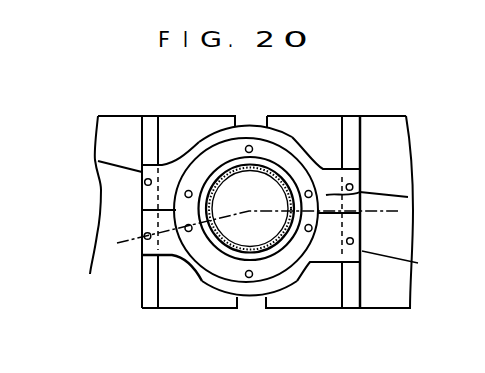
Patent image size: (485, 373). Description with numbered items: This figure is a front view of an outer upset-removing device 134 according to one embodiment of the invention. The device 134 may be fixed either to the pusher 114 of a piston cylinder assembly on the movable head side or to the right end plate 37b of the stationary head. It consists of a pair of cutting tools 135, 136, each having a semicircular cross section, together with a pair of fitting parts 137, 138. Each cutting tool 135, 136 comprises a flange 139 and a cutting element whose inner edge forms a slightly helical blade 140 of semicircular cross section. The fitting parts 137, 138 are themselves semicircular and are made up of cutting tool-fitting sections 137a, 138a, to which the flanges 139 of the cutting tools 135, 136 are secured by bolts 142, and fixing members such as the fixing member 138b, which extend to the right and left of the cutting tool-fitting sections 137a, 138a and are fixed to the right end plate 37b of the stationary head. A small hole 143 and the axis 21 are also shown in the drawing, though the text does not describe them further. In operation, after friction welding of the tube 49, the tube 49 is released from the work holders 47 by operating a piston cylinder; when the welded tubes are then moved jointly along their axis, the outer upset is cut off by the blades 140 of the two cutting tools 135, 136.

The pusher 114 is at (117, 123).
The right end plate 37b is at (282, 127).
The work holders 47 is at (170, 123).
The cutting tool-fitting section 137a is at (98, 162).
The flange 139 is at (231, 140).
The bolts 142 is at (249, 145).
The blade 140 is at (270, 139).
The cutting tool 135 is at (288, 150).
The fitting part 137 is at (331, 176).
The hole 143 is at (145, 183).
The tube 49 is at (222, 166).
The axis 21 is at (118, 243).
The fixing member 138b is at (134, 290).
The fitting part 138 is at (336, 250).
The cutting tool 136 is at (294, 262).
The cutting tool-fitting section 138a is at (278, 287).
The outer upset-removing device 134 is at (239, 298).